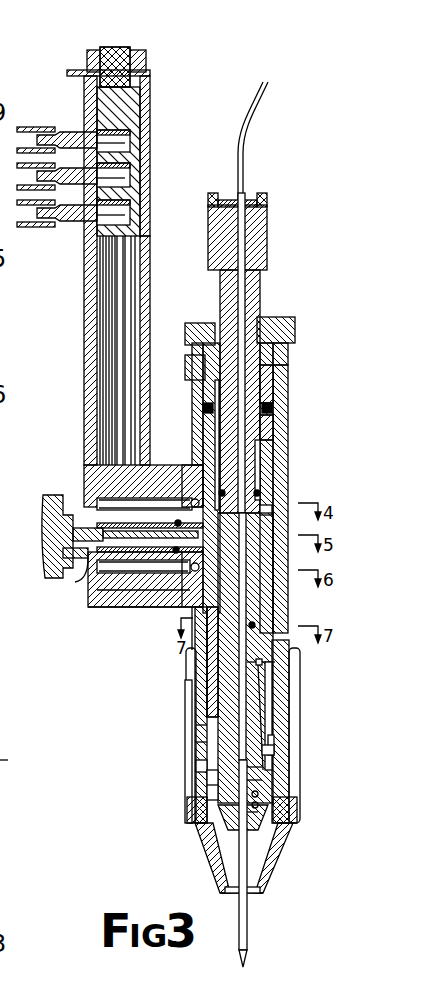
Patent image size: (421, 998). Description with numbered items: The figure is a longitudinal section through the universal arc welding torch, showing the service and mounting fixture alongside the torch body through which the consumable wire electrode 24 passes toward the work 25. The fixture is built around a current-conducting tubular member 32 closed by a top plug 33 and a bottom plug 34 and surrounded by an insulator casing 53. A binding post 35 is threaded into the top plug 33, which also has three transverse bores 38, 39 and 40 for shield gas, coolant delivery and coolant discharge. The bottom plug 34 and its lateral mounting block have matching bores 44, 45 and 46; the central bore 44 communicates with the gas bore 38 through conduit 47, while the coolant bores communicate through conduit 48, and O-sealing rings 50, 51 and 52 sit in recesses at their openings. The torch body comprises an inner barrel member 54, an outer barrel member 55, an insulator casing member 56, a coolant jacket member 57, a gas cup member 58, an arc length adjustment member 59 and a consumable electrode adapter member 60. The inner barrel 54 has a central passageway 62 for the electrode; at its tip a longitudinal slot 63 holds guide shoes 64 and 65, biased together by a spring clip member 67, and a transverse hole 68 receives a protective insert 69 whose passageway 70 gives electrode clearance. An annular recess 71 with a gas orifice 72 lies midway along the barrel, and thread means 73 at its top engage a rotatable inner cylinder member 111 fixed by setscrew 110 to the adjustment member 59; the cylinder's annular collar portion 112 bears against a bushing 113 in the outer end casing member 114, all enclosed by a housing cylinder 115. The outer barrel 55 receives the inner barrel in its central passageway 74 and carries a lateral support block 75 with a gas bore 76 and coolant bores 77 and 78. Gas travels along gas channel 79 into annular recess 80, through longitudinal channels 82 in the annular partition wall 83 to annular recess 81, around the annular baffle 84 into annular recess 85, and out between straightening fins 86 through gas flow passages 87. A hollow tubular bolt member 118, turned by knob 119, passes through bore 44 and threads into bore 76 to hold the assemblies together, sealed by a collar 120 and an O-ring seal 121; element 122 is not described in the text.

The consumable wire electrode 24 is at (252, 130).
The work 25 is at (16, 761).
The tubular member 32 is at (148, 243).
The top plug 33 is at (130, 98).
The bottom plug 34 is at (135, 607).
The binding post 35 is at (118, 48).
The shield gas bore 38 is at (118, 145).
The coolant bore 39 is at (112, 180).
The coolant bore 40 is at (115, 218).
The shield gas bore 44 is at (110, 590).
The coolant bore 45 is at (100, 490).
The coolant bore 46 is at (125, 610).
The conduit 47 is at (105, 385).
The conduit 48 is at (118, 415).
The O-sealing ring 50 is at (170, 575).
The O-sealing ring 51 is at (183, 500).
The O-sealing ring 52 is at (195, 560).
The insulator casing 53 is at (150, 288).
The inner barrel member 54 is at (220, 812).
The outer barrel member 55 is at (262, 622).
The insulator casing member 56 is at (265, 700).
The coolant jacket member 57 is at (298, 690).
The gas cup member 58 is at (292, 847).
The arc length adjustment member 59 is at (293, 318).
The consumable electrode adapter member 60 is at (265, 255).
The central passageway 62 is at (208, 655).
The longitudinal slot 63 is at (263, 663).
The guide shoe 64 is at (250, 767).
The guide shoe 65 is at (248, 780).
The spring clip member 67 is at (262, 750).
The transverse hole 68 is at (255, 794).
The protective insert 69 is at (255, 805).
The passageway 70 is at (258, 812).
The annular recess 71 is at (266, 510).
The gas orifice 72 is at (262, 488).
The thread means 73 is at (258, 458).
The central passageway 74 is at (268, 720).
The lateral support block 75 is at (185, 640).
The inert gas receiving bore 76 is at (60, 538).
The coolant bore 77 is at (190, 503).
The coolant bore 78 is at (180, 600).
The gas channel 79 is at (270, 677).
The annular recess 80 is at (203, 712).
The annular recess 81 is at (205, 742).
The longitudinal channels 82 is at (272, 737).
The annular partition wall 83 is at (200, 725).
The annular baffle 84 is at (205, 760).
The annular recess 85 is at (210, 773).
The straightening fins 86 is at (215, 785).
The gas flow passages 87 is at (222, 800).
The setscrew 110 is at (187, 355).
The inner cylinder member 111 is at (262, 383).
The annular collar portion 112 is at (268, 413).
The bushing 113 is at (290, 397).
The outer end casing member 114 is at (288, 362).
The housing cylinder 115 is at (290, 436).
The tubular bolt member 118 is at (165, 555).
The turning knob 119 is at (80, 556).
The collar 120 is at (95, 573).
The O-ring seal 121 is at (100, 510).
The passage 122 is at (115, 600).